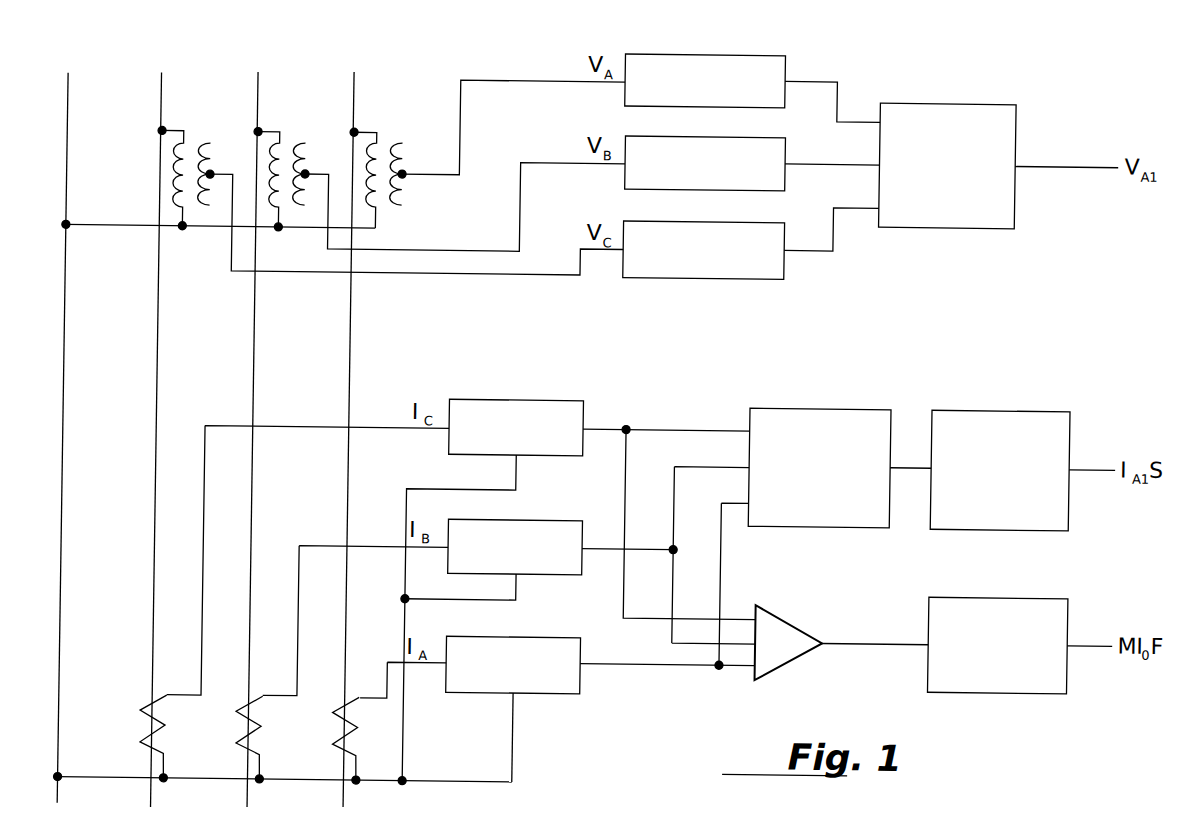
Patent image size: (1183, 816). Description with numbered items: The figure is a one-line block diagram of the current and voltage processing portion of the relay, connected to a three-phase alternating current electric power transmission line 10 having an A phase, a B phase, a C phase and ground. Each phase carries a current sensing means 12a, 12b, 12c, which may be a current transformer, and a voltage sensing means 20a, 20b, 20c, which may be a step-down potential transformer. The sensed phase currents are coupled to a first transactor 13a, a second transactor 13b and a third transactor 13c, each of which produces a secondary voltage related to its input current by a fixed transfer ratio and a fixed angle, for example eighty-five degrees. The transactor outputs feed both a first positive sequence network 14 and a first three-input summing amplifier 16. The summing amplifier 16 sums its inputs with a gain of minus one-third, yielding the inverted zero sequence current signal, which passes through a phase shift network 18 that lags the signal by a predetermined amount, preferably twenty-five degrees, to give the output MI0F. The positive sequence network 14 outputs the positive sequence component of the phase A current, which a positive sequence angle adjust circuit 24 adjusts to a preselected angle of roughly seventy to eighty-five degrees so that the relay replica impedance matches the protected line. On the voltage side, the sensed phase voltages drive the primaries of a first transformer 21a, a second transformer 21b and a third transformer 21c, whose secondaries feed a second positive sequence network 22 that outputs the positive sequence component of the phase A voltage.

The three-phase alternating current electric power transmission line 10 is at (59, 114).
The current sensing means 12a is at (363, 740).
The current sensing means 12b is at (269, 740).
The current sensing means 12c is at (170, 738).
The first transactor 13a is at (557, 636).
The second transactor 13b is at (536, 521).
The third transactor 13c is at (578, 408).
The first positive sequence network 14 is at (824, 415).
The first three-input summing amplifier 16 is at (803, 630).
The phase shift network 18 is at (1051, 598).
The voltage sensing means 20a is at (385, 164).
The voltage sensing means 20b is at (289, 165).
The voltage sensing means 20c is at (187, 164).
The first transformer 21a is at (778, 61).
The second transformer 21b is at (778, 138).
The third transformer 21c is at (773, 216).
The second positive sequence network 22 is at (980, 206).
The positive sequence angle adjust circuit 24 is at (1001, 403).